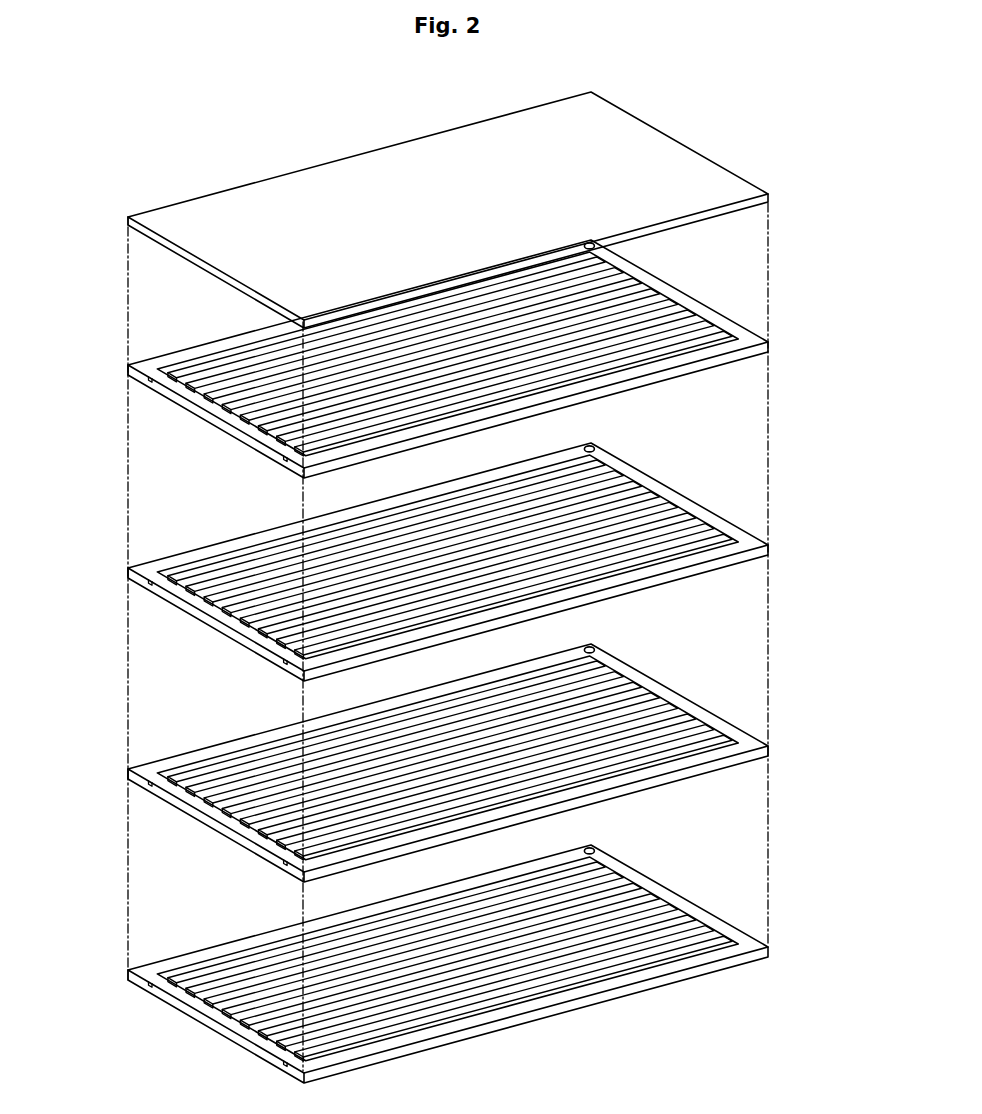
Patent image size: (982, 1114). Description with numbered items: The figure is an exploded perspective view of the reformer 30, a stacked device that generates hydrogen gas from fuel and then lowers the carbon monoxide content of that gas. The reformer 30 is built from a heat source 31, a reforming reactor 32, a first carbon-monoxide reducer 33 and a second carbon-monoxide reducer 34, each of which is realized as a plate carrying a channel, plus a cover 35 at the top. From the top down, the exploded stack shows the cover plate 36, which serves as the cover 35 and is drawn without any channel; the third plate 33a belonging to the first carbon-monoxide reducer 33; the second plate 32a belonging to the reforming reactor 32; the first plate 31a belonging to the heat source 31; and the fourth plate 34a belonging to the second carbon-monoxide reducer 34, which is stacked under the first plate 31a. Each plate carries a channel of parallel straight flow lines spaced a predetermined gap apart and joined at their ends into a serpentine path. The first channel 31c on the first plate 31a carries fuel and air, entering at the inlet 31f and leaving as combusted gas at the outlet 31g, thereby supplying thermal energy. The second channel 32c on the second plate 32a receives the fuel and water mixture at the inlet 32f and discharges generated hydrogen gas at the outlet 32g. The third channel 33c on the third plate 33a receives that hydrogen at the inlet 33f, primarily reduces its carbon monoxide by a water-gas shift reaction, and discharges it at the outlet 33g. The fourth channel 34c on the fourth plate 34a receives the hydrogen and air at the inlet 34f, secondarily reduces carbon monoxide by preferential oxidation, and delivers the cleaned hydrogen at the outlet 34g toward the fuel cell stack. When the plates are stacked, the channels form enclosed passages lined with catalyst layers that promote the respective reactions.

The reformer 30 is at (824, 102).
The cover 35 is at (750, 158).
The cover plate 36 is at (127, 226).
The first carbon-monoxide reducer 33 is at (457, 364).
The third plate 33a is at (114, 344).
The third channel 33c is at (704, 334).
The inlet 33f is at (147, 380).
The outlet 33g is at (285, 456).
The reforming reactor 32 is at (457, 567).
The second plate 32a is at (114, 547).
The second channel 32c is at (704, 537).
The inlet 32f is at (285, 659).
The outlet 32g is at (147, 583).
The heat source 31 is at (457, 768).
The first plate 31a is at (114, 748).
The first channel 31c is at (704, 738).
The inlet 31f is at (285, 860).
The outlet 31g is at (147, 784).
The second carbon-monoxide reducer 34 is at (457, 969).
The fourth plate 34a is at (114, 949).
The fourth channel 34c is at (704, 939).
The inlet 34f is at (147, 985).
The outlet 34g is at (285, 1061).